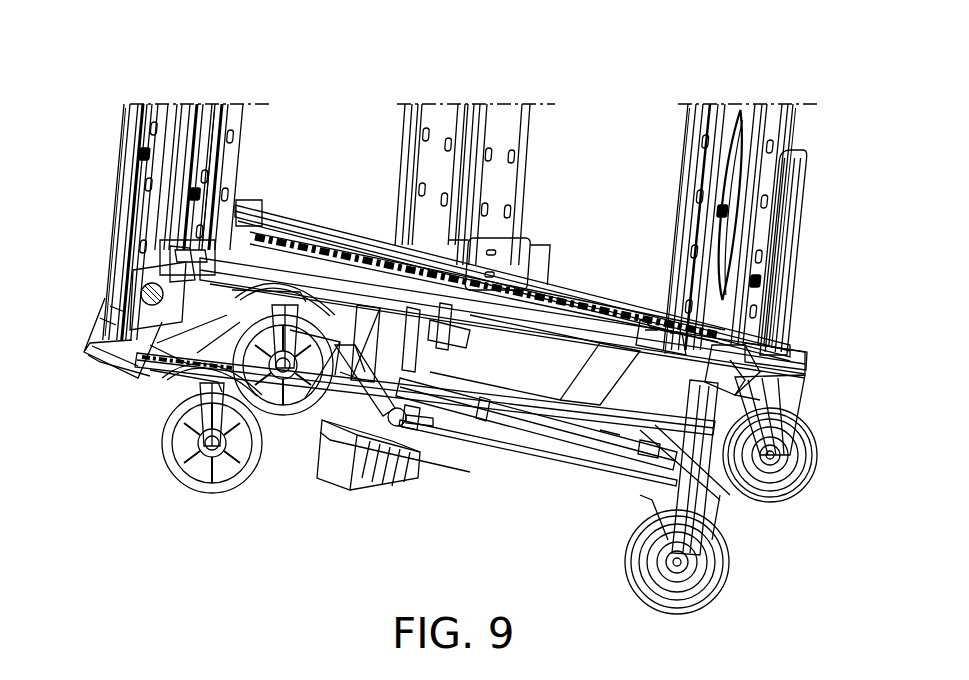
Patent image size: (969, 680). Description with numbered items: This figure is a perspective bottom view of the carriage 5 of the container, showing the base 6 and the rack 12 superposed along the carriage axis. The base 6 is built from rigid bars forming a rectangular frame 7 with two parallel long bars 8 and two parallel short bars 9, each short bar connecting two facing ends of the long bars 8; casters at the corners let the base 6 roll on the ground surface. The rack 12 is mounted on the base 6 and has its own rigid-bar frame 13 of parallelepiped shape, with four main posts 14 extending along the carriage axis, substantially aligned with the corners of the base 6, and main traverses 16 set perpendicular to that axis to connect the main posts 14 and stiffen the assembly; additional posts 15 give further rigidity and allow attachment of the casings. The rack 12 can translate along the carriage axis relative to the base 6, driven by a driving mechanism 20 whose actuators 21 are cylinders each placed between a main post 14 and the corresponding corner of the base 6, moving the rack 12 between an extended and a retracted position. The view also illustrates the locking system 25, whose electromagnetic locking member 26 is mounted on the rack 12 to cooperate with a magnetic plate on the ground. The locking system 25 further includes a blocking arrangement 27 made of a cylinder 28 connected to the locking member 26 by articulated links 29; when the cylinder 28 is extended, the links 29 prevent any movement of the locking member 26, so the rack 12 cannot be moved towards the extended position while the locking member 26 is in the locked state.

The carriage 5 is at (847, 188).
The base 6 is at (849, 498).
The frame 7 is at (803, 358).
The long bars 8 is at (558, 325).
The short bars 9 is at (173, 267).
The rack 12 is at (812, 128).
The frame 13 is at (216, 122).
The main posts 14 is at (237, 118).
The additional posts 15 is at (507, 117).
The main traverses 16 is at (302, 224).
The driving mechanism 20 is at (827, 268).
The actuators 21 is at (110, 182).
The locking system 25 is at (449, 467).
The locking member 26 is at (328, 451).
The blocking arrangement 27 is at (571, 480).
The cylinder 28 is at (627, 463).
The articulated links 29 is at (356, 448).